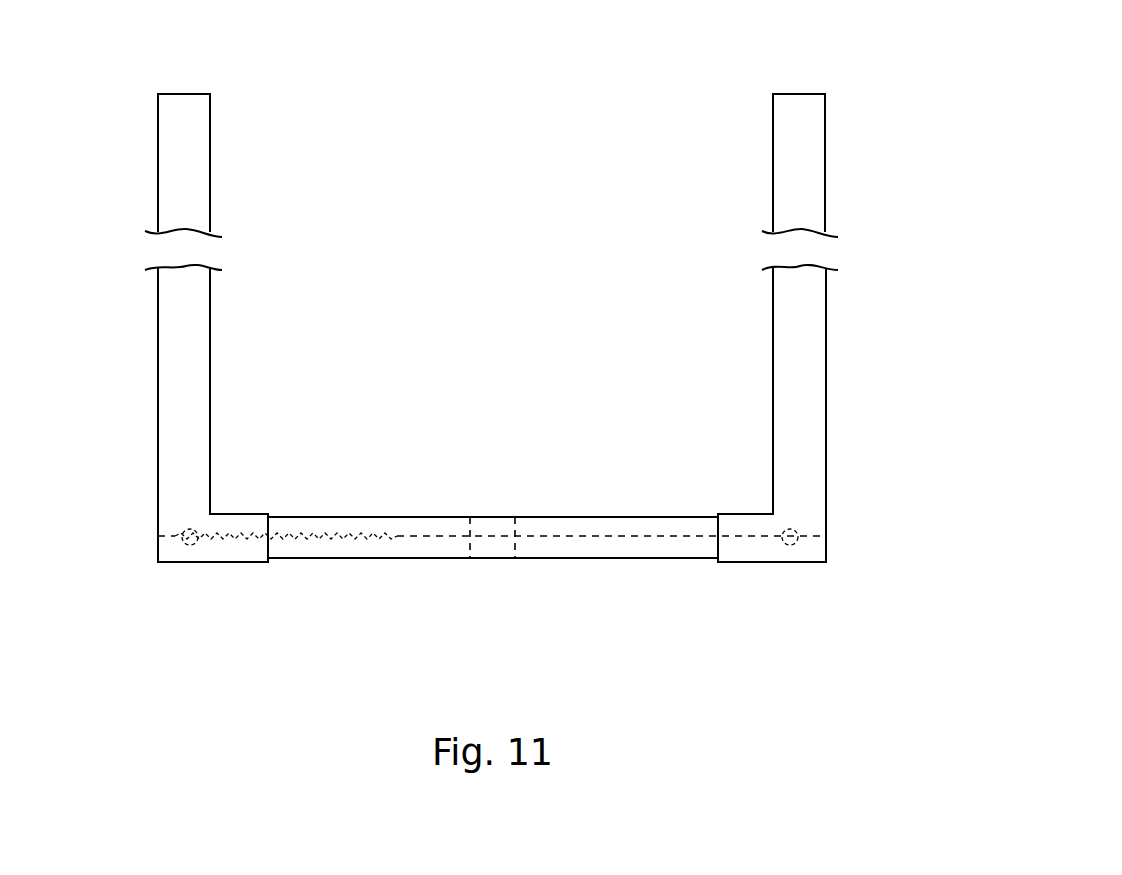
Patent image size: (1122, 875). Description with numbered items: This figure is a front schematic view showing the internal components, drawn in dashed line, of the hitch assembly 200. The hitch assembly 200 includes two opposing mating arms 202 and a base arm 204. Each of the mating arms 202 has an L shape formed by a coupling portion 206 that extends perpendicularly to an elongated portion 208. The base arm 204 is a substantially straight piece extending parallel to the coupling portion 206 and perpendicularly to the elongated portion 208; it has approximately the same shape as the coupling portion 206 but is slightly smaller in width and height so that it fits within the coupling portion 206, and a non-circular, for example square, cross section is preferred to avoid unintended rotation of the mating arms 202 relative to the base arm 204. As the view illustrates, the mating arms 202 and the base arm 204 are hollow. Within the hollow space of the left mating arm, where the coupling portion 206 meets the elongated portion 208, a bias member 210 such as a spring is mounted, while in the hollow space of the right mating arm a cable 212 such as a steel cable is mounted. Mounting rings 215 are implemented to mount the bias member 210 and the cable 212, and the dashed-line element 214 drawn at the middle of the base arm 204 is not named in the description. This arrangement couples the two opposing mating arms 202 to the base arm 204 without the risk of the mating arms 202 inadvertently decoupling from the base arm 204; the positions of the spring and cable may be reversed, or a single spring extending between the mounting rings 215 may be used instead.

The hitch assembly 200 is at (941, 96).
The mating arms 202 is at (185, 372).
The base arm 204 is at (375, 545).
The coupling portion 206 is at (213, 550).
The elongated portion 208 is at (177, 183).
The bias member 210 is at (292, 535).
The cable 212 is at (677, 537).
The coupling section 214 is at (488, 525).
The mounting rings 215 is at (176, 543).